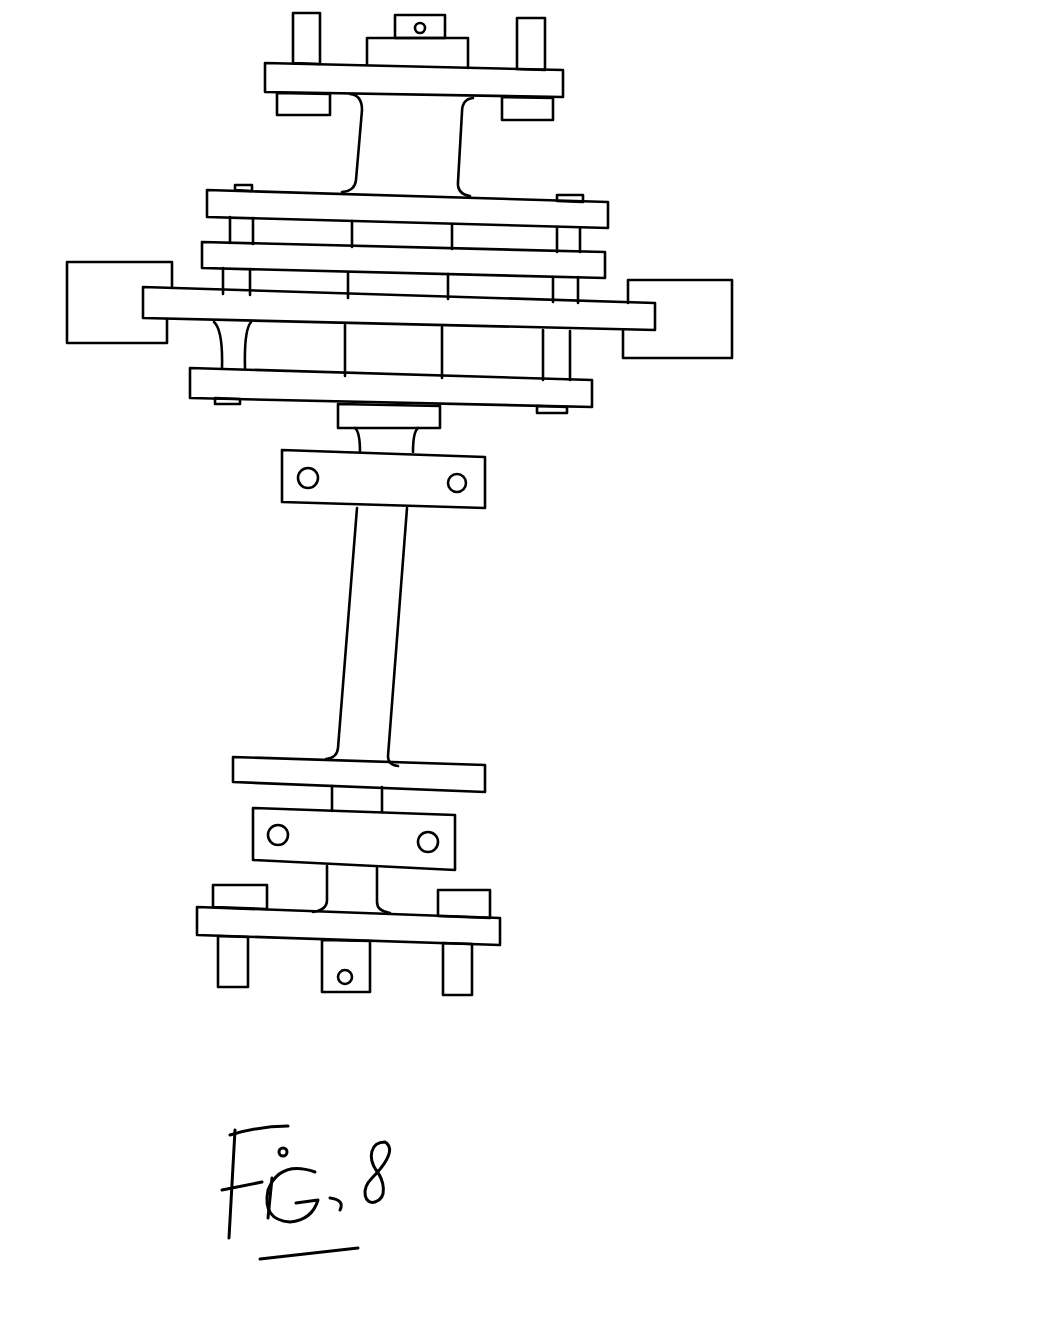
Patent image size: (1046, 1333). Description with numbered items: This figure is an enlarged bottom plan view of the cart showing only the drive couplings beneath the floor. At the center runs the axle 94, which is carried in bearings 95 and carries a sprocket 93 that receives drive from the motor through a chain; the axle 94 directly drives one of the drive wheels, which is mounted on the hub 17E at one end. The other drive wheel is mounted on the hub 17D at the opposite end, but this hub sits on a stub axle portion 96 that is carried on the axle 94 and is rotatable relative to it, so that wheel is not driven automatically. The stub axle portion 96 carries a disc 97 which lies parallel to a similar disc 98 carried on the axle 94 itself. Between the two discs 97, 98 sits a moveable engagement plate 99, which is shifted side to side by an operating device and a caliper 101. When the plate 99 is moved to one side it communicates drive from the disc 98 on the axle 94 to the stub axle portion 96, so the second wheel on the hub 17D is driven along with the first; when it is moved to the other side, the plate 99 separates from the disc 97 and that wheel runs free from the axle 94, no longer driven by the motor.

The hub 17D is at (543, 73).
The stub axle portion 96 is at (382, 143).
The disc 97 is at (628, 240).
The caliper 101 is at (703, 335).
The moveable engagement plate 99 is at (610, 320).
The disc 98 is at (500, 393).
The bearings 95 is at (303, 467).
The axle 94 is at (383, 620).
The sprocket 93 is at (445, 780).
The hub 17E is at (478, 933).